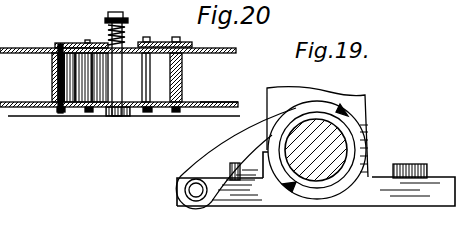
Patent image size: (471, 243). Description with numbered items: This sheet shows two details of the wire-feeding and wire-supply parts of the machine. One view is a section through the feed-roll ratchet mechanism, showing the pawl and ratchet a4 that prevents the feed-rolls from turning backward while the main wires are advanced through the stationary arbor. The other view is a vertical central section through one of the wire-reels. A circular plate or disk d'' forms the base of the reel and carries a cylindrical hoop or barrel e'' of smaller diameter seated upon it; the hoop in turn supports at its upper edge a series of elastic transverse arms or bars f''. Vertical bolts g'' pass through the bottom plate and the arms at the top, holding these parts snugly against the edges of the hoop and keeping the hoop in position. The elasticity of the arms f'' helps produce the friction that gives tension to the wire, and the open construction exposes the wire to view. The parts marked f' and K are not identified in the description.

In FIG. 20, the elastic transverse arms or bars f'' is at (120, 74).
In FIG. 20, the plate f' is at (165, 37).
In FIG. 20, the vertical bolts g'' is at (125, 64).
In FIG. 20, the cylindrical hoop or barrel e'' is at (176, 82).
In FIG. 20, the circular plate or disk d'' is at (224, 88).
In FIG. 20, the coil K is at (44, 87).
In FIG. 19, the pawl and ratchet a4 is at (278, 147).